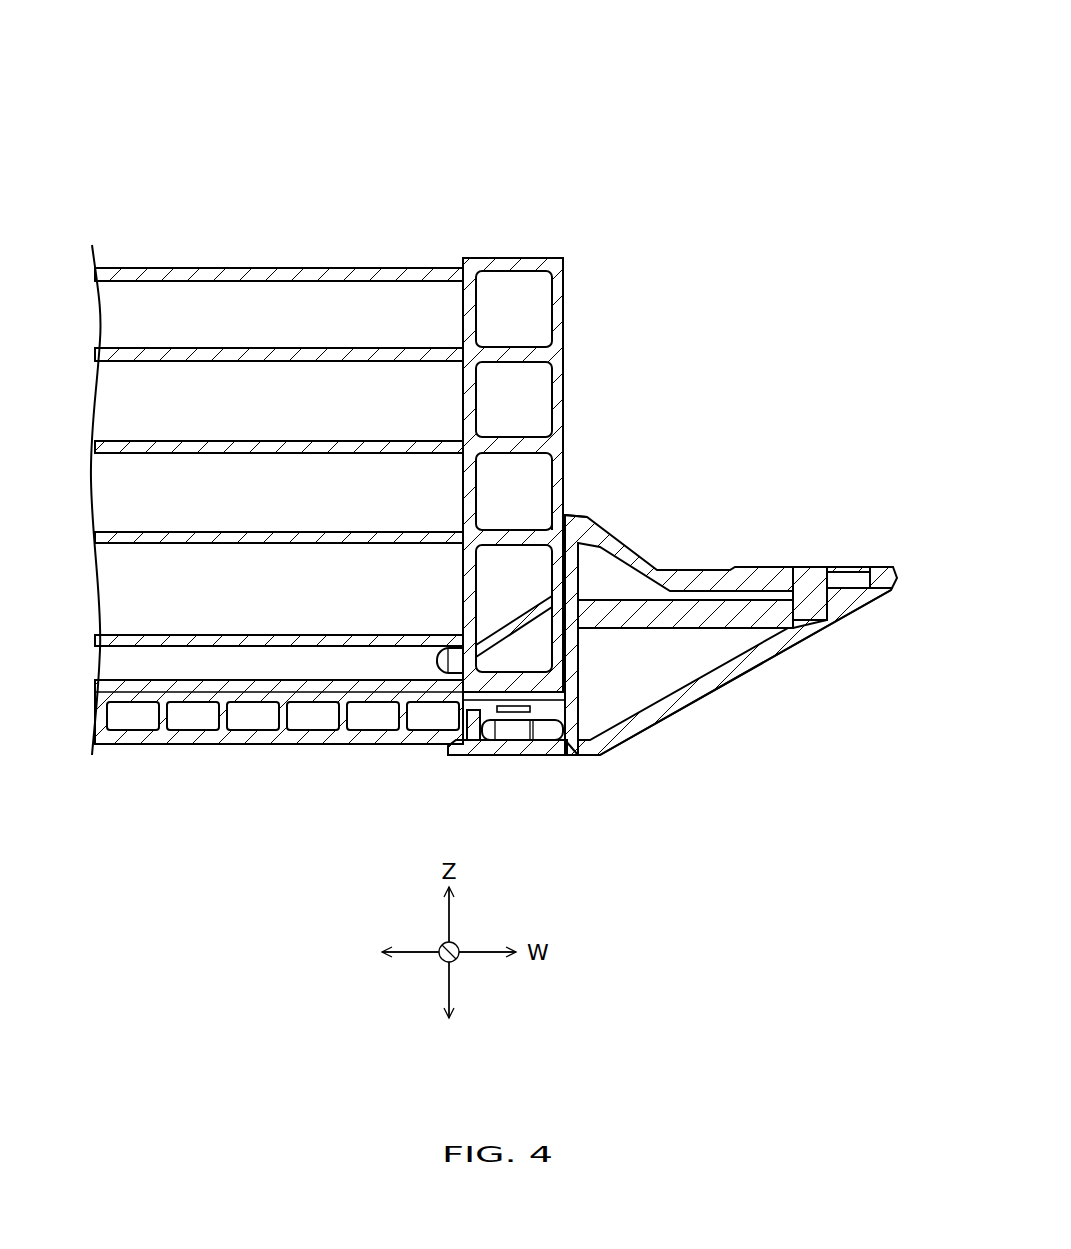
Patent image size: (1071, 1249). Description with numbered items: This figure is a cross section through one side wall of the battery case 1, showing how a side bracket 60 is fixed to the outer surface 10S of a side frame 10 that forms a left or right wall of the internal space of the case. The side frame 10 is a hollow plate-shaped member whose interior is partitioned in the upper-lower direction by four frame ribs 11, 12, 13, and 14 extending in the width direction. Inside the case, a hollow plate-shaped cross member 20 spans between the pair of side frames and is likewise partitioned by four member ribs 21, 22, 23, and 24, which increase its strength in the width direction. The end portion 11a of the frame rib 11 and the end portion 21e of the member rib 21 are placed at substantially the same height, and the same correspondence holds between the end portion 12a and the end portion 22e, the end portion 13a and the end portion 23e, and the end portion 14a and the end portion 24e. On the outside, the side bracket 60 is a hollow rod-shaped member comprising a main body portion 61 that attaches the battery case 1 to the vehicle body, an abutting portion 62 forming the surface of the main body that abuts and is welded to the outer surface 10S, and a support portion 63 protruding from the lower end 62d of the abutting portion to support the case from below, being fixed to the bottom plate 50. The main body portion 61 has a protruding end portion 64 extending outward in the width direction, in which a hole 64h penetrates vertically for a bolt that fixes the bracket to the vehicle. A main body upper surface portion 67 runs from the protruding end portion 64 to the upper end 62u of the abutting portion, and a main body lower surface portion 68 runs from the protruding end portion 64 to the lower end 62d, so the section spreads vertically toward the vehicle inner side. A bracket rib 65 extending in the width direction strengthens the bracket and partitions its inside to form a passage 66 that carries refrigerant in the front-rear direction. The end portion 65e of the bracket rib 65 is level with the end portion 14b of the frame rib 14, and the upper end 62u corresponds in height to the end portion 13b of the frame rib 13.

The battery case 1 is at (419, 97).
The side frame 10 is at (540, 242).
The outer surface 10S is at (566, 408).
The frame rib 11 is at (509, 335).
The end portion 11a is at (480, 365).
The frame rib 12 is at (509, 426).
The end portion 12a is at (479, 455).
The frame rib 13 is at (508, 518).
The end portion 13a is at (477, 546).
The end portion 13b is at (542, 516).
The frame rib 14 is at (505, 620).
The end portion 14a is at (477, 648).
The end portion 14b is at (548, 603).
The cross member 20 is at (220, 246).
The member rib 21 is at (145, 348).
The end portion 21e is at (460, 348).
The member rib 22 is at (145, 441).
The end portion 22e is at (462, 441).
The member rib 23 is at (145, 532).
The end portion 23e is at (462, 532).
The member rib 24 is at (145, 635).
The end portion 24e is at (459, 650).
The bottom plate 50 is at (358, 750).
The side bracket 60 is at (760, 546).
The main body portion 61 is at (702, 562).
The abutting portion 62 is at (573, 540).
The upper end 62u is at (581, 517).
The lower end 62d is at (575, 748).
The support portion 63 is at (538, 764).
The protruding end portion 64 is at (896, 580).
The hole 64h is at (854, 566).
The bracket rib 65 is at (731, 628).
The end portion 65e is at (584, 630).
The passage 66 is at (622, 714).
The main body upper surface portion 67 is at (786, 568).
The main body lower surface portion 68 is at (777, 653).